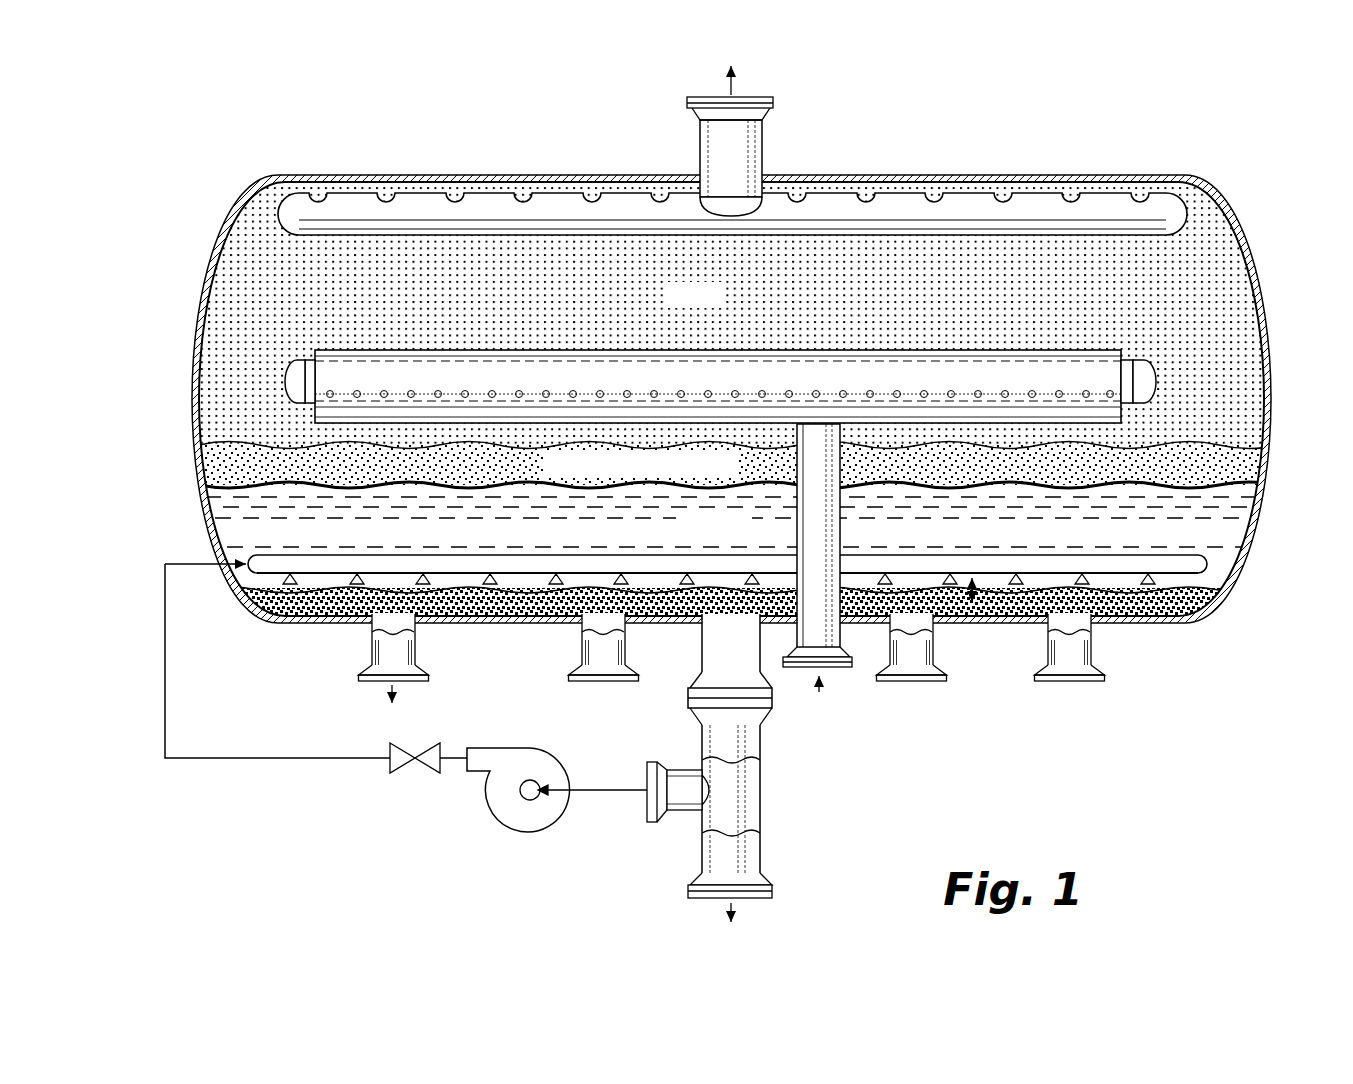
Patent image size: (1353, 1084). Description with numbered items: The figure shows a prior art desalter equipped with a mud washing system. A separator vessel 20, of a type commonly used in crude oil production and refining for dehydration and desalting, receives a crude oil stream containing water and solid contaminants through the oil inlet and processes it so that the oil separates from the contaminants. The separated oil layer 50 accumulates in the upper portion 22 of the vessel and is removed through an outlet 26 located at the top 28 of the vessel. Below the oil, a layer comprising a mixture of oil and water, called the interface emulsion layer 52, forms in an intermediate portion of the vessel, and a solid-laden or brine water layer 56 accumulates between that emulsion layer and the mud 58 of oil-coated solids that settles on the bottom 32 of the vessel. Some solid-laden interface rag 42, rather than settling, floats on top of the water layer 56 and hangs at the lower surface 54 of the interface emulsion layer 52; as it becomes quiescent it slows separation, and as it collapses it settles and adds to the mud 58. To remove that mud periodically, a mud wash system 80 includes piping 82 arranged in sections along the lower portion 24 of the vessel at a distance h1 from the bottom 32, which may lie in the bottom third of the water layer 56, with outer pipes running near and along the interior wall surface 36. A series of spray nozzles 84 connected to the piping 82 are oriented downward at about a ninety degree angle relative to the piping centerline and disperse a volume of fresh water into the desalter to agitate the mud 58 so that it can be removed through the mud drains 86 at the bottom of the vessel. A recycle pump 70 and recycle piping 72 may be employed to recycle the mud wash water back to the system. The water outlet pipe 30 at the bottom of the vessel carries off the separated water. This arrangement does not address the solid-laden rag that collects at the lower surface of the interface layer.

The separator vessel 20 is at (706, 509).
The upper portion 22 is at (224, 222).
The lower portion 24 is at (236, 560).
The outlet 26 is at (698, 140).
The top 28 is at (818, 176).
The water outlet pipe 30 is at (700, 658).
The bottom 32 is at (1000, 621).
The interior wall surface 36 is at (505, 621).
The interface rag 42 is at (1224, 488).
The oil layer 50 is at (1166, 267).
The interface emulsion layer 52 is at (1219, 462).
The lower surface 54 is at (230, 478).
The water layer 56 is at (1178, 540).
The mud 58 is at (1150, 623).
The recycle pump 70 is at (502, 803).
The recycle piping 72 is at (163, 745).
The mud wash system 80 is at (252, 540).
The piping 82 is at (323, 567).
The spray nozzles 84 is at (290, 583).
The mud drains 86 is at (416, 647).
The distance h1 is at (973, 608).